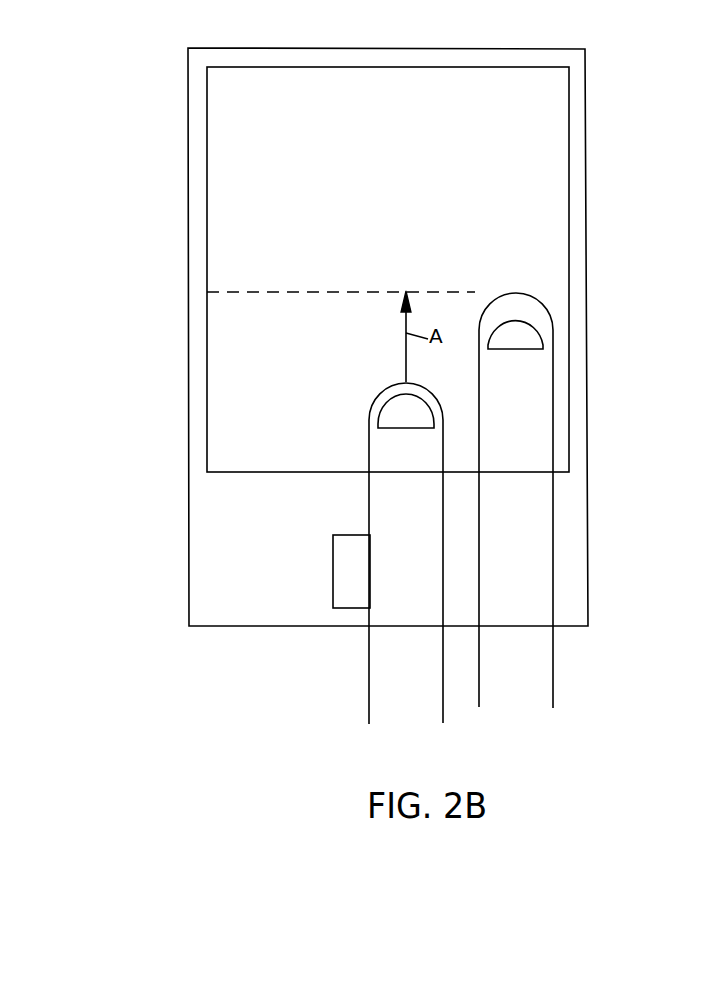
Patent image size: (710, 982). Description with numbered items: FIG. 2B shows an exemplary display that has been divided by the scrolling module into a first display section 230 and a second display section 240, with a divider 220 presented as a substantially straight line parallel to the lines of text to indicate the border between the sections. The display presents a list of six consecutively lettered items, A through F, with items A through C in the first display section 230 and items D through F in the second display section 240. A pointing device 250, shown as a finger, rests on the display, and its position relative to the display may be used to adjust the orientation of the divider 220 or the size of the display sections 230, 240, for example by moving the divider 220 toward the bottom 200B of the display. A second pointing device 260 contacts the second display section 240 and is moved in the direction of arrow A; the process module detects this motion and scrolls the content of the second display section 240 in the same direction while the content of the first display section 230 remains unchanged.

The bottom of the display 200B is at (267, 473).
The divider 220 is at (456, 292).
The first display section 230 is at (318, 175).
The second display section 240 is at (305, 399).
The pointing device 250 is at (515, 527).
The second pointing device 260 is at (388, 653).